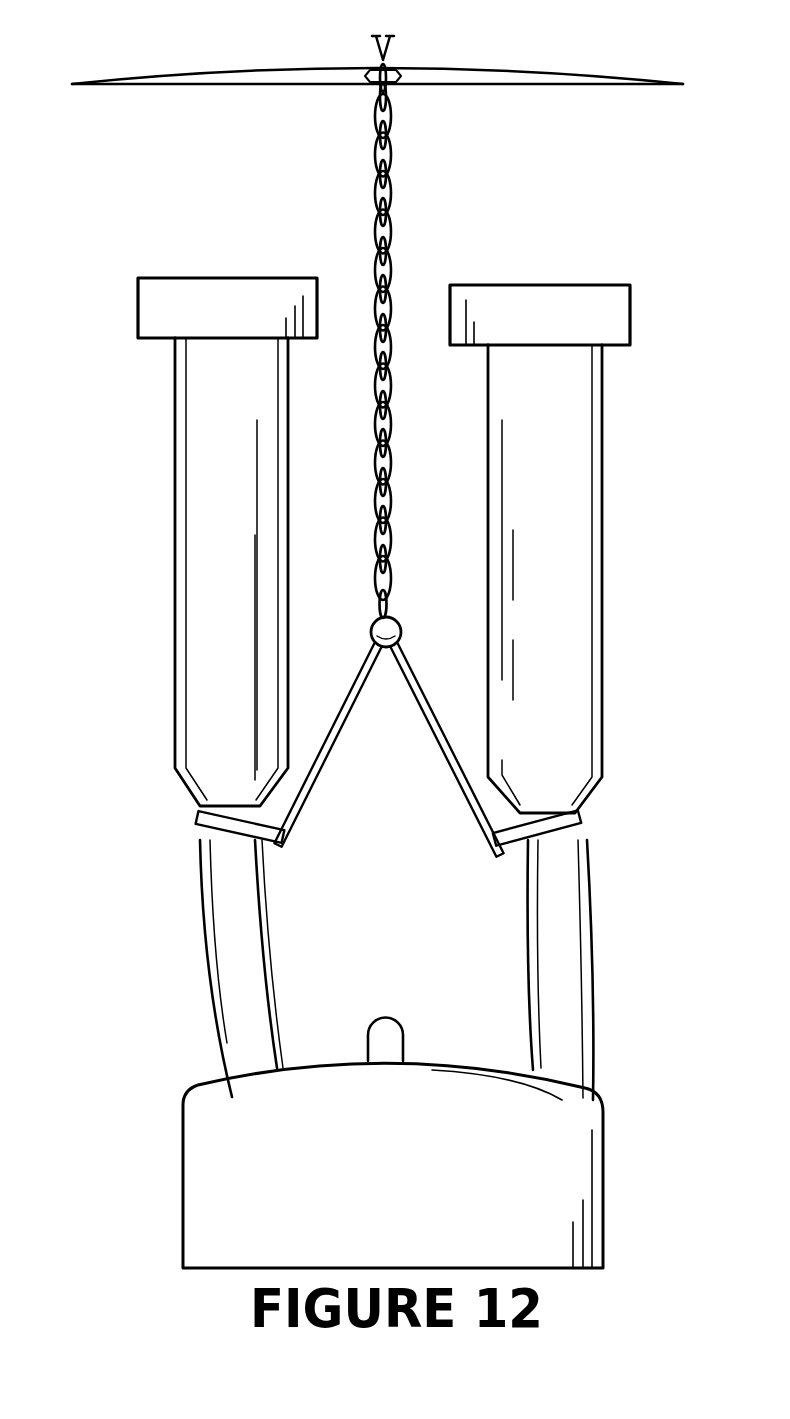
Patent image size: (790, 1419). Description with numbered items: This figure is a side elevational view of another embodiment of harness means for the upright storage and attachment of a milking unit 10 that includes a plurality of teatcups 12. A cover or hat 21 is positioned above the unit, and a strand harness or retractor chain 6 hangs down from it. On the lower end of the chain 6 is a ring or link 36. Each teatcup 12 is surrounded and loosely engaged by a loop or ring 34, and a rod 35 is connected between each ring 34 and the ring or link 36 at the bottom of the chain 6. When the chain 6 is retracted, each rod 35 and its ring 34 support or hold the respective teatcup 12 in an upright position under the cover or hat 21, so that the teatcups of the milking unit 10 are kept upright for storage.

The milking unit 10 is at (187, 1122).
The teatcup 12 is at (175, 615).
The cover or hat 21 is at (282, 68).
The retractor chain 6 is at (398, 181).
The ring 34 is at (200, 822).
The rod 35 is at (342, 743).
The ring or link 36 is at (402, 624).